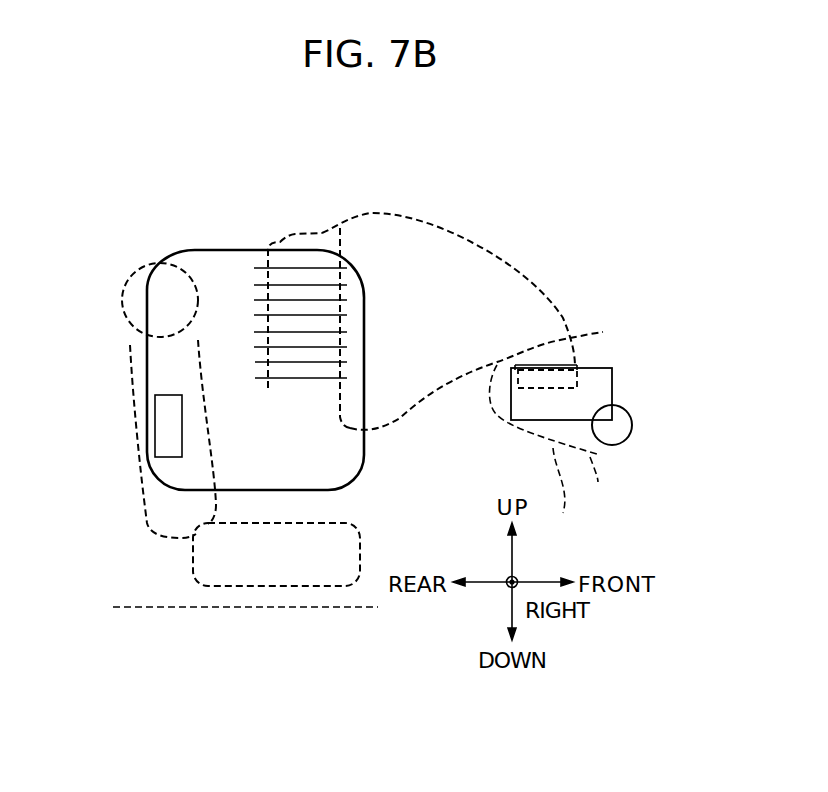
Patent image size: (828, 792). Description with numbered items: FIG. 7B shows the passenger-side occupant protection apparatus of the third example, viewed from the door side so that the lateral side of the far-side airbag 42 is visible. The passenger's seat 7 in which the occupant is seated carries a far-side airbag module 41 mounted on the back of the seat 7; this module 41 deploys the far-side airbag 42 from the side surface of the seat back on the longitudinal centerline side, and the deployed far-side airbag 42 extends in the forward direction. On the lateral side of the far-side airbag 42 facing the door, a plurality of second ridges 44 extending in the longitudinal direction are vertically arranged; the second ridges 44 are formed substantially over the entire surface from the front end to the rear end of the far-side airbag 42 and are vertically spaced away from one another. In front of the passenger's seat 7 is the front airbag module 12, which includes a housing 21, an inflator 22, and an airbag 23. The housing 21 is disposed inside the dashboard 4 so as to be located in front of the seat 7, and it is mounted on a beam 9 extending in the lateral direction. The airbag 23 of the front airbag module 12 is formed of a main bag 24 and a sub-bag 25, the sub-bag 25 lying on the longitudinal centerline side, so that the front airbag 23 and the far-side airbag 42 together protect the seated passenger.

The dashboard 4 is at (566, 511).
The passenger's seat 7 is at (160, 530).
The beam 9 is at (612, 444).
The front airbag module 12 is at (405, 130).
The housing 21 is at (603, 368).
The inflator 22 is at (548, 367).
The airbag 23 is at (387, 176).
The main bag 24 is at (454, 240).
The sub-bag 25 is at (313, 243).
The far-side airbag module 41 is at (168, 430).
The far-side airbag 42 is at (208, 332).
The second ridges 44 is at (295, 270).